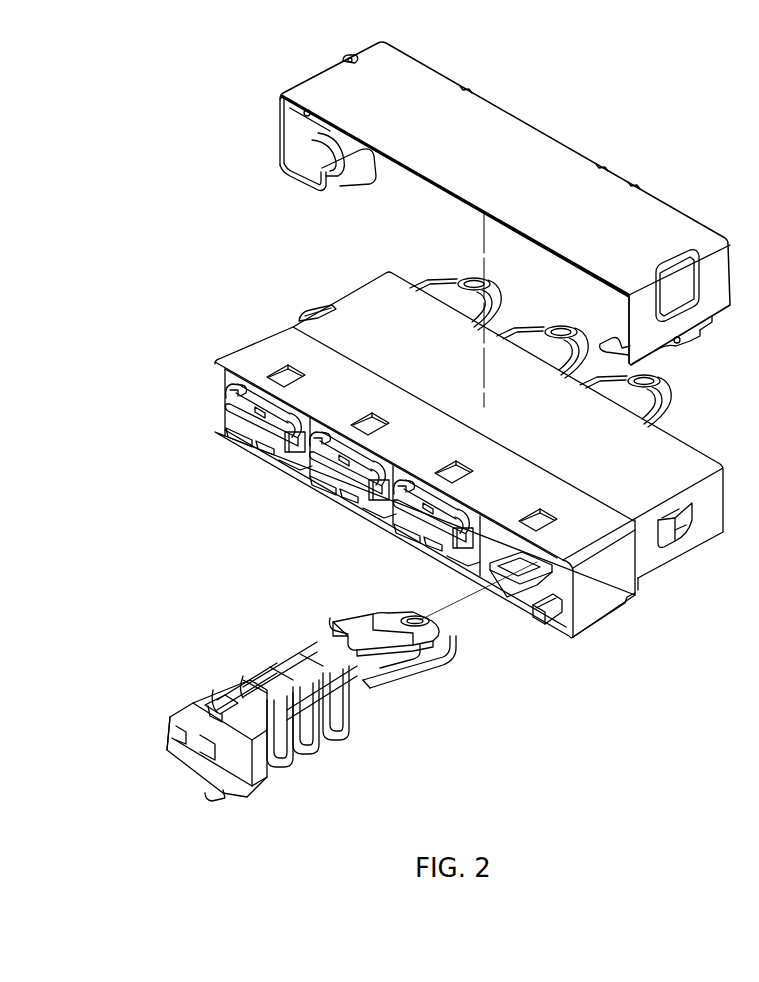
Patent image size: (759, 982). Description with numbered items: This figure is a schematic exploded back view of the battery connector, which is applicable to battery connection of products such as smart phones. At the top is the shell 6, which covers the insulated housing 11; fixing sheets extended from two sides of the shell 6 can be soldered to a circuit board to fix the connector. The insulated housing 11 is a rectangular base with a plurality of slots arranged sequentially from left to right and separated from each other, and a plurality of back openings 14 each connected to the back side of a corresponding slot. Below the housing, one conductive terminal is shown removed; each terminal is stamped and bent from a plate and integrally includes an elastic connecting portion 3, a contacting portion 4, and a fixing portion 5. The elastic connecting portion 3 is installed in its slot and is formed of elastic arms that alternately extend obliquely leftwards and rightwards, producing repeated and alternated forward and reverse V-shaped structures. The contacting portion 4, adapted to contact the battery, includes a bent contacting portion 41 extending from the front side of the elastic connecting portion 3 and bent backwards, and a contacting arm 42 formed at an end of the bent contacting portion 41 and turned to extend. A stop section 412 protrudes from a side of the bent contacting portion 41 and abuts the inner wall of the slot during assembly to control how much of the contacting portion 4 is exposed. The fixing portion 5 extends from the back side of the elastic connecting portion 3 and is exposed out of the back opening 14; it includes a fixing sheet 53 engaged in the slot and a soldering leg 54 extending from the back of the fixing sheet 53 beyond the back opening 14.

The shell 6 is at (613, 203).
The insulated housing 11 is at (263, 353).
The back openings 14 is at (540, 612).
The elastic connecting portion 3 is at (244, 695).
The contacting portion 4 is at (372, 648).
The bent contacting portion 41 is at (413, 620).
The stop section 412 is at (333, 620).
The contacting arm 42 is at (368, 683).
The fixing portion 5 is at (149, 761).
The fixing sheet 53 is at (207, 720).
The soldering leg 54 is at (226, 818).